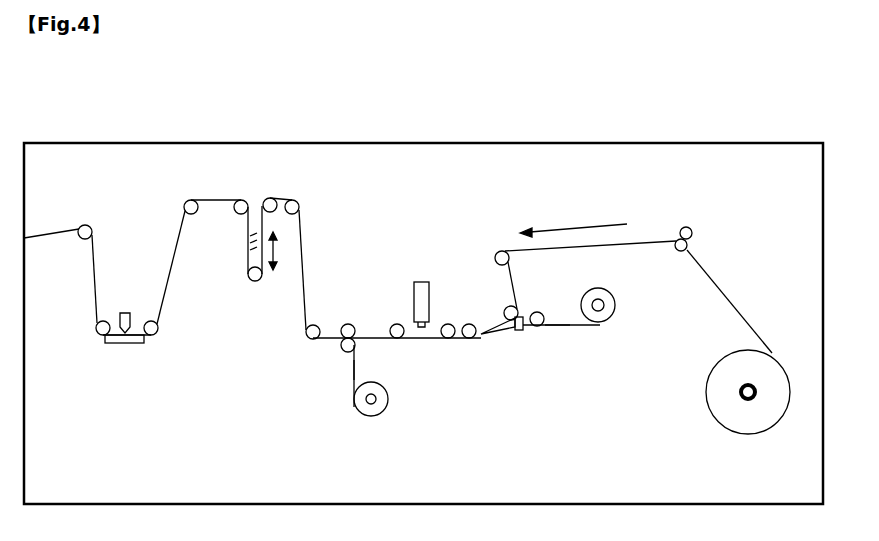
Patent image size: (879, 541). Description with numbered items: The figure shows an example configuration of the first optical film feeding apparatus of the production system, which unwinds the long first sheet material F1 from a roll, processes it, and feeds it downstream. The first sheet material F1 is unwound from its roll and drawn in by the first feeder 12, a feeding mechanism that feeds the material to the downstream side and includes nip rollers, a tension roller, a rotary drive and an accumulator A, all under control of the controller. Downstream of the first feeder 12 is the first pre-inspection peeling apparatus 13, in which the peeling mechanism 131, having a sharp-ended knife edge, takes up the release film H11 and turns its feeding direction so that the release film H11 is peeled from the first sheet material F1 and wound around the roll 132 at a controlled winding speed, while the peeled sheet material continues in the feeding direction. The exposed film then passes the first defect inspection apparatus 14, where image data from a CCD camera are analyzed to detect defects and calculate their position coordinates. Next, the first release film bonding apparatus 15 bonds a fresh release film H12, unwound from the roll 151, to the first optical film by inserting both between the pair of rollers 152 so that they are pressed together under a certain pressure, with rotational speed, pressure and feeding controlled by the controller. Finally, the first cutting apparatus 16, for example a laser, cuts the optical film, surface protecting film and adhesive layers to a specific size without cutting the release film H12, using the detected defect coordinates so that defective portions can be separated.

The first feeder 12 is at (705, 227).
The first pre-inspection peeling apparatus 13 is at (576, 370).
The peeling mechanism 131 is at (513, 327).
The roll 132 is at (598, 312).
The first defect inspection apparatus 14 is at (420, 281).
The first release film bonding apparatus 15 is at (331, 430).
The roll 151 is at (375, 412).
The pair of rollers 152 is at (341, 366).
The first cutting apparatus 16 is at (126, 311).
The accumulator A is at (253, 297).
The first sheet material F1 is at (777, 355).
The release film H11 is at (557, 322).
The release film H12 is at (354, 370).